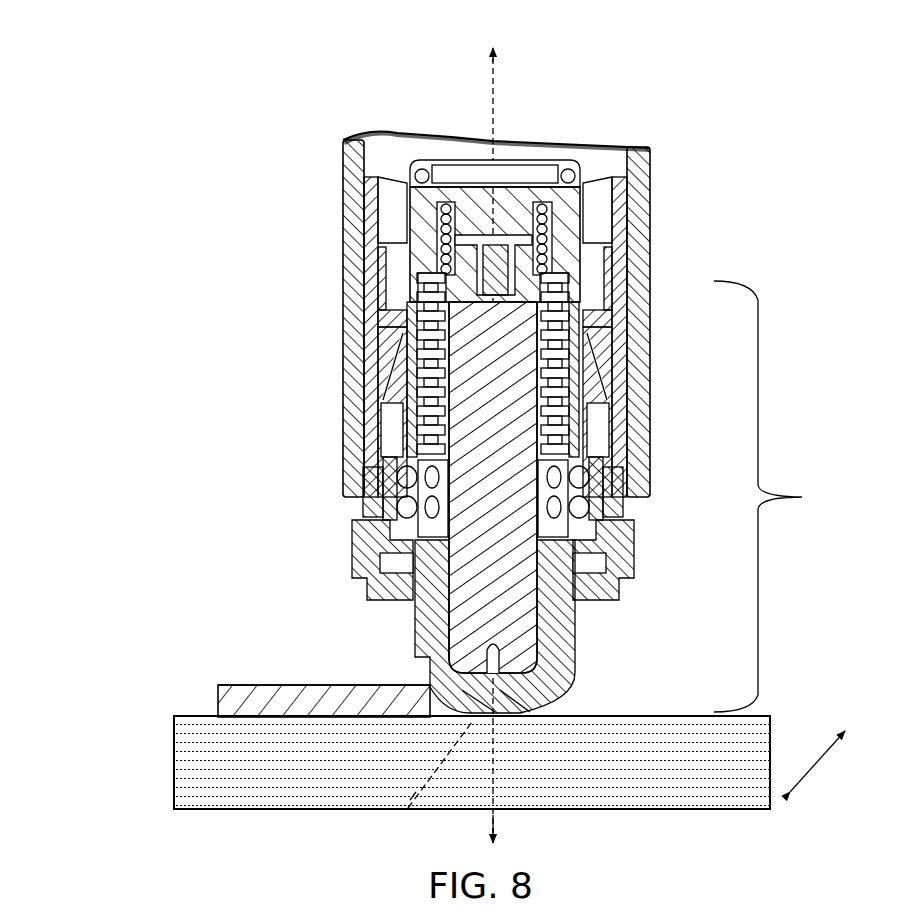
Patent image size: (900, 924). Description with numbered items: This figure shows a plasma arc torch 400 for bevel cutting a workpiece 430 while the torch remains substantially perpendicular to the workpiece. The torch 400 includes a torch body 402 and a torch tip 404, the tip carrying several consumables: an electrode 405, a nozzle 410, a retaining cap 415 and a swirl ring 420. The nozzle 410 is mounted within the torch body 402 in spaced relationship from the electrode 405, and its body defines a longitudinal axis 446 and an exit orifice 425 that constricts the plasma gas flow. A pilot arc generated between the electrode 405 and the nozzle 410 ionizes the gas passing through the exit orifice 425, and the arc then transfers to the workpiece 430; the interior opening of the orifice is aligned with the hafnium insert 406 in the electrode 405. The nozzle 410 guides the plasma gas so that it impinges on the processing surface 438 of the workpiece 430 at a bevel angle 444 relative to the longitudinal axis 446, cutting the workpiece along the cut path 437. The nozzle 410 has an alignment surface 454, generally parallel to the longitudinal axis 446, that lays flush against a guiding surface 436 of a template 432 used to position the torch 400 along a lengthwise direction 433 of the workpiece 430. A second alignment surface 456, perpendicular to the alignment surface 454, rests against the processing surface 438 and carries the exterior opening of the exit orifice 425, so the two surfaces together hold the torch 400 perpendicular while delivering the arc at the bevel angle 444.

The plasma arc torch 400 is at (738, 209).
The torch body 402 is at (385, 160).
The torch tip 404 is at (782, 496).
The electrode 405 is at (515, 623).
The hafnium insert 406 is at (499, 663).
The nozzle 410 is at (557, 647).
The retaining cap 415 is at (387, 563).
The swirl ring 420 is at (378, 436).
The exit orifice 425 is at (477, 703).
The workpiece 430 is at (647, 795).
The template 432 is at (233, 695).
The lengthwise direction 433 is at (827, 761).
The guiding surface 436 is at (433, 705).
The cut path 437 is at (443, 760).
The processing surface 438 is at (190, 716).
The bevel angle 444 is at (446, 765).
The longitudinal axis 446 is at (519, 833).
The alignment surface 454 is at (443, 663).
The second alignment surface 456 is at (510, 702).